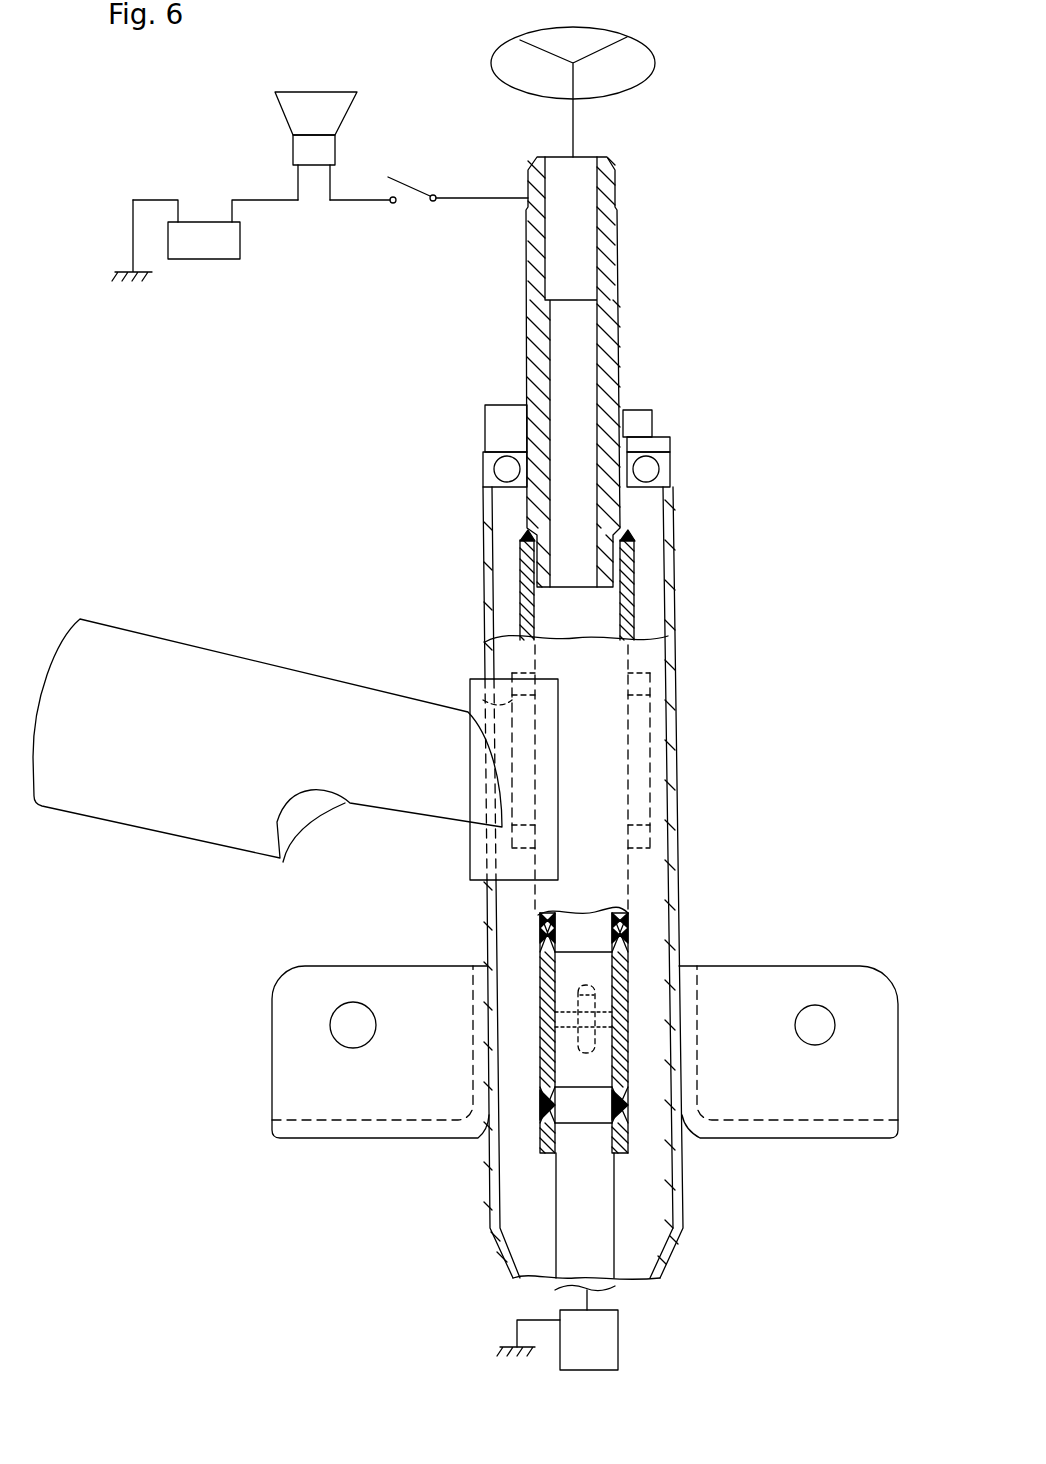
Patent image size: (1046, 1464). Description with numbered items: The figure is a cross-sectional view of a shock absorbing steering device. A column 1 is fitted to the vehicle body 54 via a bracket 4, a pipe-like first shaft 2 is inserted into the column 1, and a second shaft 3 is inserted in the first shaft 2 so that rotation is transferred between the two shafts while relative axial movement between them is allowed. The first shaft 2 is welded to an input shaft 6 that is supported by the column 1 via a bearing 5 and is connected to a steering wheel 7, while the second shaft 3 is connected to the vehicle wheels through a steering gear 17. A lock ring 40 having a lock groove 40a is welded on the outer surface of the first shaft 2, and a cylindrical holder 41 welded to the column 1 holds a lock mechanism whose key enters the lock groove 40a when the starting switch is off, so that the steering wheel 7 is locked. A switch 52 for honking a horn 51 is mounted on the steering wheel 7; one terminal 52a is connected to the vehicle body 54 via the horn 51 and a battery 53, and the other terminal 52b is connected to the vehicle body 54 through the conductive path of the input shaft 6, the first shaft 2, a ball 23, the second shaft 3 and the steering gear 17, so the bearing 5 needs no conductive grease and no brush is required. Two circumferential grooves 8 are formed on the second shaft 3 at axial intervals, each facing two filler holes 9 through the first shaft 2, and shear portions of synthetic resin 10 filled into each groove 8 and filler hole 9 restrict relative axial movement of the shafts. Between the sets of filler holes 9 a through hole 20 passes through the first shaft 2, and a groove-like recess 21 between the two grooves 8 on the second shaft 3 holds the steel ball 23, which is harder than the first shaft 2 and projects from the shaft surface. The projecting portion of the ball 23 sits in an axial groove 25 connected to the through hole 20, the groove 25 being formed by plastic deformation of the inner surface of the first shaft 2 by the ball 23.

The column 1 is at (673, 550).
The first shaft 2 is at (628, 607).
The second shaft 3 is at (608, 1198).
The bracket 4 is at (777, 983).
The bearing 5 is at (650, 468).
The input shaft 6 is at (613, 363).
The steering wheel 7 is at (640, 82).
The circumferential grooves 8 is at (590, 907).
The filler holes 9 is at (547, 923).
The synthetic resin 10 is at (625, 942).
The steering gear 17 is at (612, 1337).
The through hole 20 is at (603, 1047).
The recess 21 is at (615, 1022).
The ball 23 is at (618, 1022).
The groove 25 is at (577, 995).
The lock ring 40 is at (677, 680).
The lock groove 40a is at (493, 705).
The cylindrical holder 41 is at (290, 690).
The horn 51 is at (340, 108).
The switch 52 is at (412, 185).
The terminal 52a is at (392, 204).
The terminal 52b is at (435, 202).
The battery 53 is at (218, 259).
The vehicle body 54 is at (132, 282).